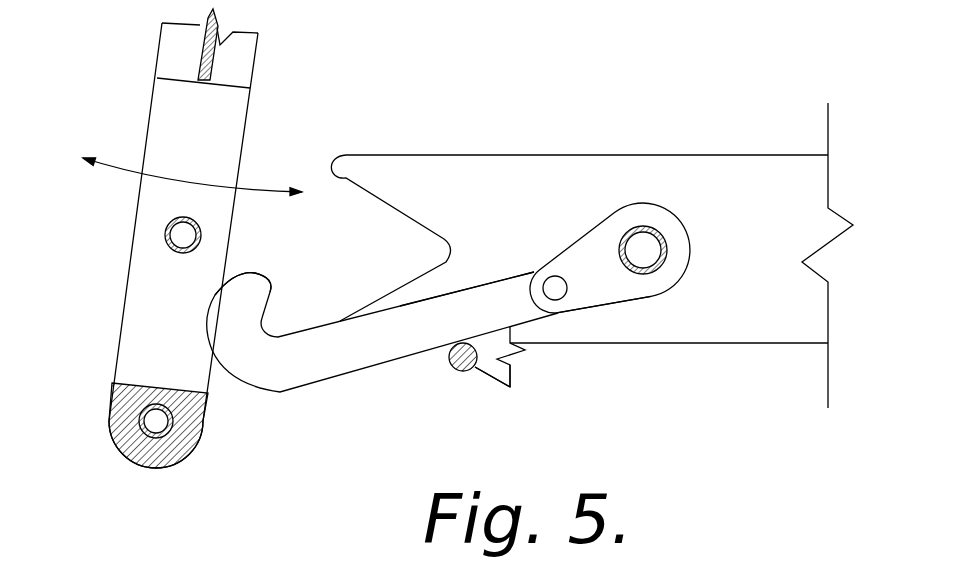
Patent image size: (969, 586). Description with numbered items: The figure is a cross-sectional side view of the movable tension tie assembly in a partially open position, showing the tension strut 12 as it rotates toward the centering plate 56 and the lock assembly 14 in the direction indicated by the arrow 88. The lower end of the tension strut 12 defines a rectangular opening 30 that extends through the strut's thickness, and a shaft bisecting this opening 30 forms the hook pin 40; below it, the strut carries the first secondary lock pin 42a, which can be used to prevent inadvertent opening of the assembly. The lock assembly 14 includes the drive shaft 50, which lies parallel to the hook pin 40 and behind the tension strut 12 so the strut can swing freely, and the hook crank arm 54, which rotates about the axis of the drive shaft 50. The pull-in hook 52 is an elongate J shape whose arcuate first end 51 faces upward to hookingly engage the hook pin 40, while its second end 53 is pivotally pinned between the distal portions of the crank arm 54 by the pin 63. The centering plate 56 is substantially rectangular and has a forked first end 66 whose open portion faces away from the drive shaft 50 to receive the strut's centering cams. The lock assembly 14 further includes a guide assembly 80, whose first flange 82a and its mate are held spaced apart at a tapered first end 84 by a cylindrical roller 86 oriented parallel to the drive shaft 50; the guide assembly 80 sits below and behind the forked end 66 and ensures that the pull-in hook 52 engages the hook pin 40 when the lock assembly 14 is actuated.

The tension strut 12 is at (159, 58).
The lock assembly 14 is at (557, 332).
The opening 30 is at (135, 339).
The hook pin 40 is at (164, 236).
The first secondary lock pin 42a is at (202, 443).
The drive shaft 50 is at (643, 243).
The arcuate first end 51 is at (257, 286).
The pull-in hook 52 is at (326, 382).
The second end 53 is at (530, 265).
The hook crank arm 54 is at (612, 290).
The centering plate 56 is at (517, 145).
The pin 63 is at (557, 280).
The forked first end 66 is at (345, 163).
The guide assembly 80 is at (522, 380).
The first flange 82a is at (500, 386).
The tapered first end 84 is at (447, 360).
The cylindrical roller 86 is at (477, 370).
The arrow 88 is at (116, 173).